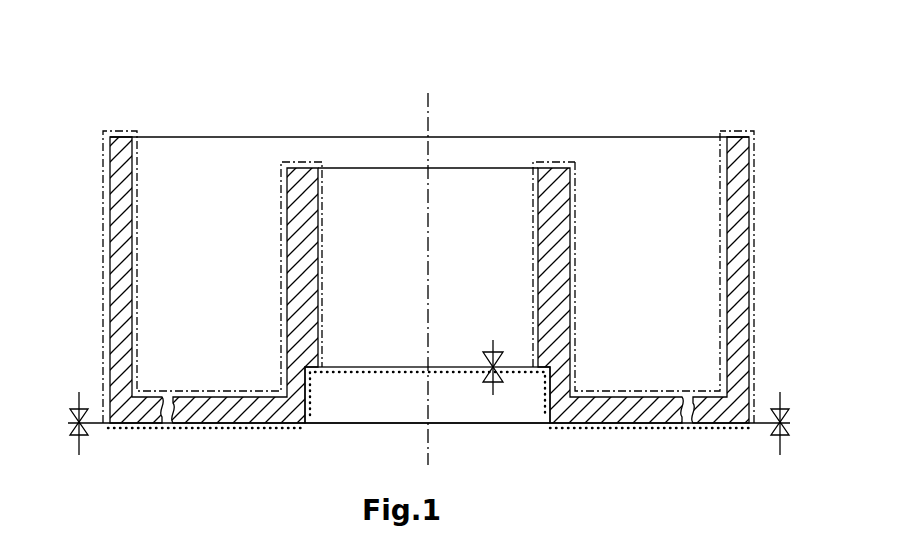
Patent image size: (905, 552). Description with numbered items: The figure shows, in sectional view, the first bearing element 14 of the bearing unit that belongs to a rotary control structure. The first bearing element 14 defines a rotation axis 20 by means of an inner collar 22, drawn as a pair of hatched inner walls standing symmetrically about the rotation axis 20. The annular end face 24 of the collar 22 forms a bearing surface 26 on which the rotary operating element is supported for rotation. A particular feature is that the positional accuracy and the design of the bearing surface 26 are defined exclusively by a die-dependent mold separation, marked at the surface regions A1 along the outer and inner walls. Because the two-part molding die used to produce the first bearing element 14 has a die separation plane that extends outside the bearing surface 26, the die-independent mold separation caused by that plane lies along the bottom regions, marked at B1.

The first bearing element 14 is at (588, 321).
The rotation axis 20 is at (428, 113).
The collar 22 is at (553, 225).
The annular end face 24 is at (553, 151).
The bearing surface 26 is at (560, 166).
The die-dependent mold separation A1 is at (103, 258).
The die-independent mold separation B1 is at (160, 428).